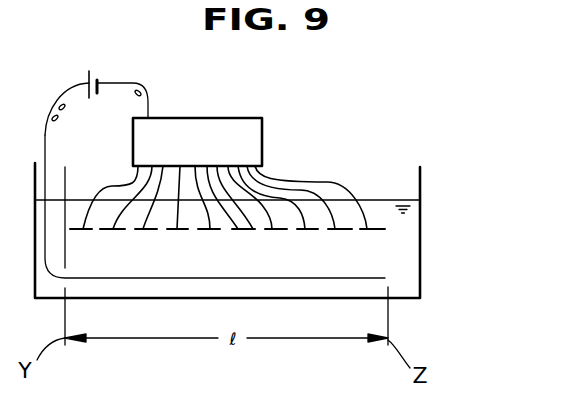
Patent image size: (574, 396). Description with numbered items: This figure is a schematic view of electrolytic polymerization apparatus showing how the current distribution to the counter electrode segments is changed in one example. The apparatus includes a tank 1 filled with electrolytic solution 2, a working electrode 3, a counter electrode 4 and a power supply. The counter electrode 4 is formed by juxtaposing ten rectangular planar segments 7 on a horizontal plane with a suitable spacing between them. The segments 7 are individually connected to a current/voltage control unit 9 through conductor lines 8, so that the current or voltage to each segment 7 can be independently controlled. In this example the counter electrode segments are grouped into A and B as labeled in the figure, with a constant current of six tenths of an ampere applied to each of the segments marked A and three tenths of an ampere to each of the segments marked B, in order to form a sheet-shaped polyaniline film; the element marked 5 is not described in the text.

The tank 1 is at (423, 173).
The electrolytic solution 2 is at (406, 233).
The working electrode 3 is at (385, 278).
The counter electrode 4 is at (380, 229).
The electrode 5 is at (65, 180).
The segments 7 is at (345, 229).
The conductor lines 8 is at (326, 181).
The current/voltage control unit 9 is at (255, 135).